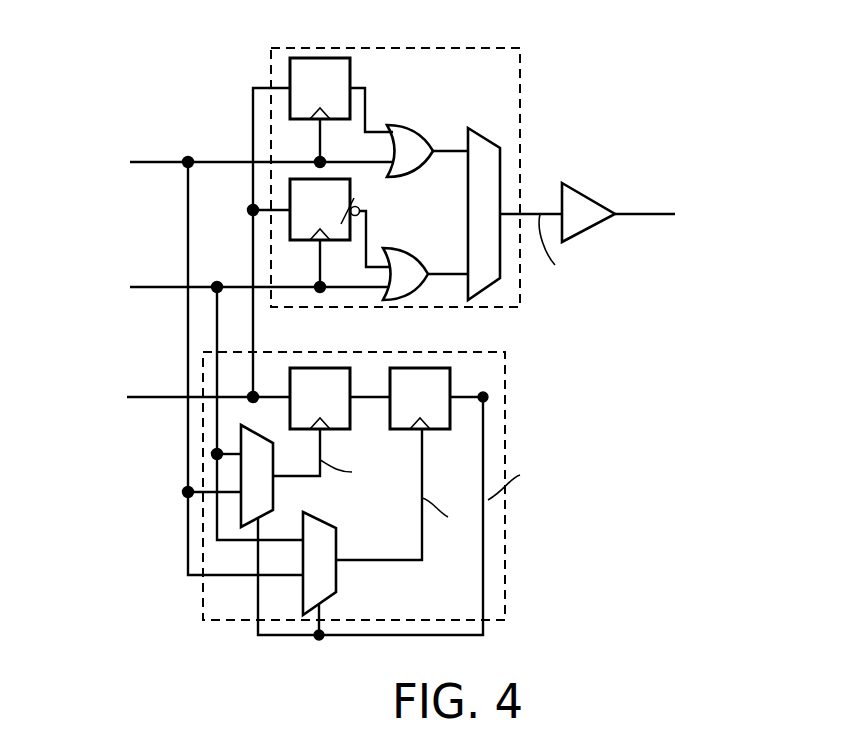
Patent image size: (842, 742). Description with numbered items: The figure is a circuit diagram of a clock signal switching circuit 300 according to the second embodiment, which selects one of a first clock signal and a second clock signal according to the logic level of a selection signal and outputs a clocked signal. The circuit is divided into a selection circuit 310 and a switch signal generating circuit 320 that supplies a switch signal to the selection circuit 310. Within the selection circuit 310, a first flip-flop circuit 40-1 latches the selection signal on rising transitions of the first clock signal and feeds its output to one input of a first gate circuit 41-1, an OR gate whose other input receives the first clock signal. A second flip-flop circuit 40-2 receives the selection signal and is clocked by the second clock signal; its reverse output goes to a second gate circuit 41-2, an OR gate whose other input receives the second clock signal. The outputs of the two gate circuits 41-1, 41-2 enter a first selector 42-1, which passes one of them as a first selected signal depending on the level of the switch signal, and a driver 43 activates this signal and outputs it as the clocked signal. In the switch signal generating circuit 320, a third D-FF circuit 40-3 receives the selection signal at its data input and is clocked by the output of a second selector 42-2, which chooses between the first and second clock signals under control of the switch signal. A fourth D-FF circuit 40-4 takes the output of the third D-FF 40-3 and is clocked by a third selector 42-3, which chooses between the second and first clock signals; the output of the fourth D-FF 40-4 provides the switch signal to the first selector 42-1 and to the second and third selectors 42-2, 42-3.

The clock signal switching circuit 300 is at (652, 68).
The selection circuit 310 is at (523, 63).
The switch signal generating circuit 320 is at (508, 372).
The first flip-flop circuit 40-1 is at (318, 58).
The second flip-flop circuit 40-2 is at (352, 187).
The third D-FF circuit 40-3 is at (310, 367).
The fourth D-FF circuit 40-4 is at (413, 368).
The first gate circuit 41-1 is at (390, 127).
The second gate circuit 41-2 is at (390, 250).
The first selector 42-1 is at (502, 156).
The second selector 42-2 is at (275, 490).
The third selector 42-3 is at (338, 578).
The driver 43 is at (578, 188).